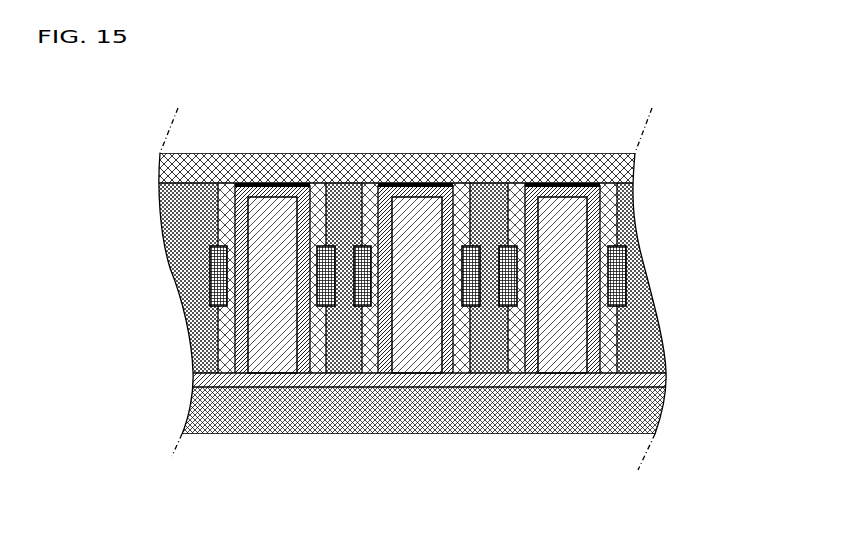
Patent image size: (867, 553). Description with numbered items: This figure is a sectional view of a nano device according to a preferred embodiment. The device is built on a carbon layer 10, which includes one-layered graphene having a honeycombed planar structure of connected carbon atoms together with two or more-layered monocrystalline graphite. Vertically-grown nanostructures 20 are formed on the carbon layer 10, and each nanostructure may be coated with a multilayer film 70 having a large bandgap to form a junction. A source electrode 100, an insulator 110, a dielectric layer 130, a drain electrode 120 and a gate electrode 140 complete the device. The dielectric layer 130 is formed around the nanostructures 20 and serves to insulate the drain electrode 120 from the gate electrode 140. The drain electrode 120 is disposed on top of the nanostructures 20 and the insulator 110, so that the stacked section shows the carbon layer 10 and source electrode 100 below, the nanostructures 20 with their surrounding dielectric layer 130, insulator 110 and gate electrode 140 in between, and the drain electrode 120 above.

The carbon layer 10 is at (340, 420).
The nanostructures 20 is at (273, 229).
The multilayer film having a large bandgap 70 is at (272, 196).
The source electrode 100 is at (190, 379).
The insulator 110 is at (165, 253).
The drain electrode 120 is at (380, 166).
The dielectric layer 130 is at (620, 204).
The gate electrode 140 is at (626, 268).